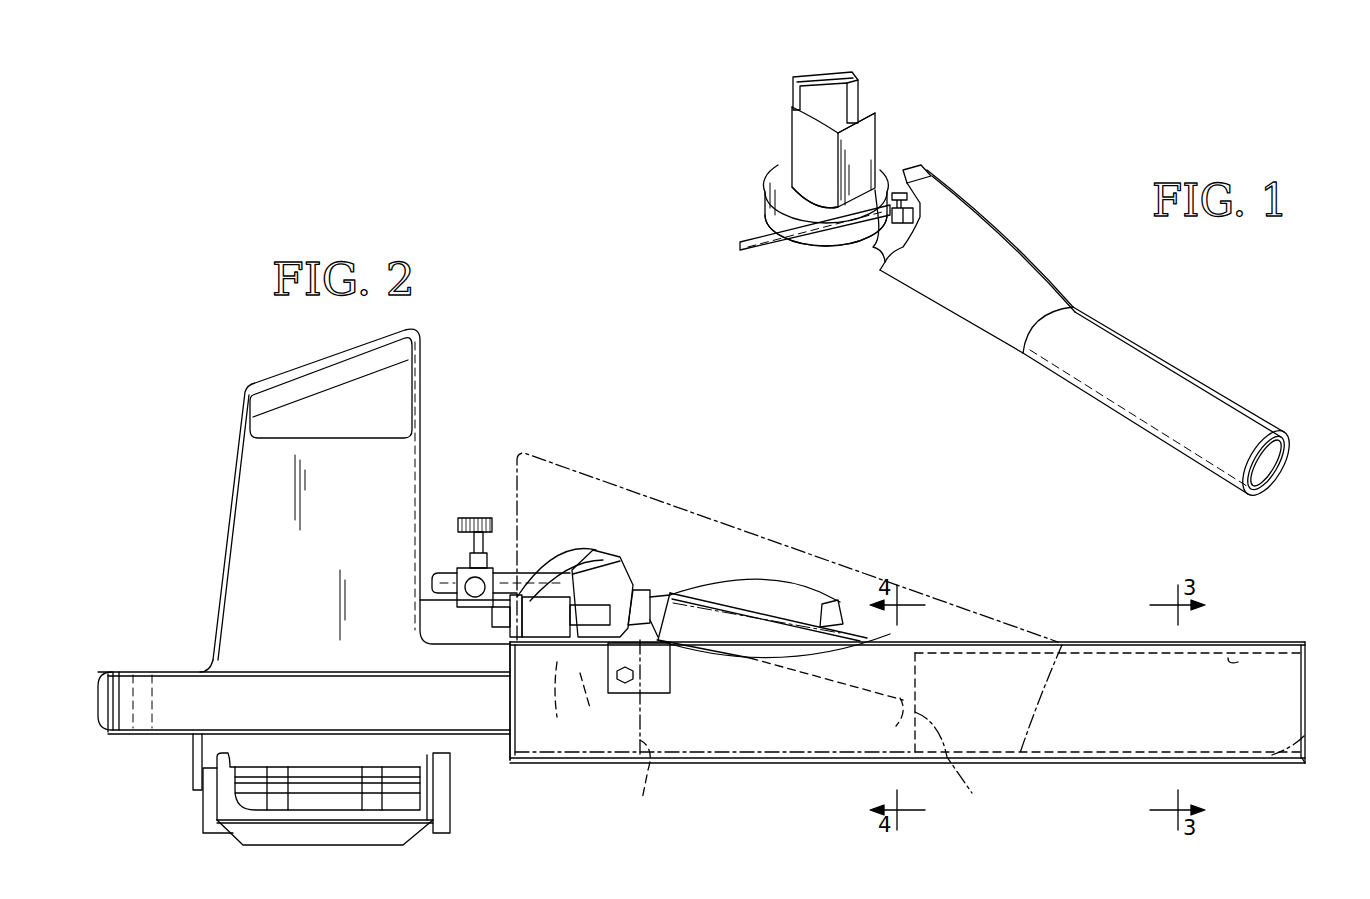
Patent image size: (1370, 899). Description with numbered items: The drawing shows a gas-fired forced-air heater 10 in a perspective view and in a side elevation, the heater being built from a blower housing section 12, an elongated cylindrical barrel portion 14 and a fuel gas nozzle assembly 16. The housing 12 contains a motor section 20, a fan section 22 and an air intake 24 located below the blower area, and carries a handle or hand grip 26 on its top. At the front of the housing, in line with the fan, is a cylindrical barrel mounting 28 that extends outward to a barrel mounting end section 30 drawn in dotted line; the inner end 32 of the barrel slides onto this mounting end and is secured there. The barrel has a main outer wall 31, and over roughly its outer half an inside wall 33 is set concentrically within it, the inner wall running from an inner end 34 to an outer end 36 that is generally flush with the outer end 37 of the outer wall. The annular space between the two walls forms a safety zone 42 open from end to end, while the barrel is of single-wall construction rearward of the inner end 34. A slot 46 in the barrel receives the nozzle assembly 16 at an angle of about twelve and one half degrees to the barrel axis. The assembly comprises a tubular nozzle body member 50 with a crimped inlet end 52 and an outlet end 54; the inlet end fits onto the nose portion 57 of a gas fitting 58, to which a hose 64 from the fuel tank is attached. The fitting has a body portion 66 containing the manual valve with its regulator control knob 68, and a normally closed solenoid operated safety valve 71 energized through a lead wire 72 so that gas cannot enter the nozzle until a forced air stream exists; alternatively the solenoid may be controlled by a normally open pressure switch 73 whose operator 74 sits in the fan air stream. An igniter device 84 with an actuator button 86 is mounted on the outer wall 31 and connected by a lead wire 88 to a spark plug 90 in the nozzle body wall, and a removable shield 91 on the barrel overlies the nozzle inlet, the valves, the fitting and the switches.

In FIG. 1, the heater 10 is at (1030, 158).
In FIG. 2, the heater 10 is at (694, 465).
In FIG. 1, the blower housing section 12 is at (895, 130).
In FIG. 2, the blower housing section 12 is at (304, 583).
In FIG. 1, the barrel portion 14 is at (1125, 322).
In FIG. 2, the barrel portion 14 is at (902, 720).
In FIG. 2, the fuel gas nozzle assembly 16 is at (742, 578).
In FIG. 1, the motor section 20 is at (798, 137).
In FIG. 2, the motor section 20 is at (408, 460).
In FIG. 1, the fan section 22 is at (765, 210).
In FIG. 2, the fan section 22 is at (135, 715).
In FIG. 1, the air intake 24 is at (820, 247).
In FIG. 2, the air intake 24 is at (205, 812).
In FIG. 1, the handle 26 is at (840, 75).
In FIG. 2, the handle 26 is at (293, 368).
In FIG. 1, the barrel mounting 28 is at (878, 268).
In FIG. 2, the barrel mounting 28 is at (478, 762).
In FIG. 2, the barrel mounting end section 30 is at (712, 732).
In FIG. 1, the main outer wall 31 is at (1218, 405).
In FIG. 2, the main outer wall 31 is at (803, 765).
In FIG. 2, the inner end 32 is at (510, 722).
In FIG. 1, the inside wall 33 is at (1282, 450).
In FIG. 2, the inside wall 33 is at (1238, 662).
In FIG. 2, the inner end 34 is at (988, 731).
In FIG. 2, the outer end 36 is at (1318, 729).
In FIG. 2, the outer end 37 is at (1300, 765).
In FIG. 2, the safety zone 42 is at (1108, 760).
In FIG. 2, the slot 46 is at (778, 655).
In FIG. 2, the tubular nozzle body member 50 is at (885, 642).
In FIG. 2, the inlet end 52 is at (663, 590).
In FIG. 2, the outlet end 54 is at (895, 718).
In FIG. 2, the nose portion 57 is at (677, 613).
In FIG. 2, the fitting 58 is at (528, 580).
In FIG. 1, the hose 64 is at (757, 252).
In FIG. 2, the hose 64 is at (440, 572).
In FIG. 2, the body portion 66 is at (478, 600).
In FIG. 1, the manual valve supply regulator control knob 68 is at (921, 175).
In FIG. 2, the manual valve supply regulator control knob 68 is at (478, 516).
In FIG. 2, the solenoid operated safety valve 71 is at (618, 562).
In FIG. 2, the lead wire 72 is at (582, 545).
In FIG. 2, the switch 73 is at (598, 703).
In FIG. 2, the operator 74 is at (559, 706).
In FIG. 2, the igniter device 84 is at (540, 640).
In FIG. 2, the actuator button 86 is at (490, 617).
In FIG. 2, the lead wire 88 is at (808, 585).
In FIG. 2, the spark plug 90 is at (845, 605).
In FIG. 1, the shield 91 is at (1005, 262).
In FIG. 2, the shield 91 is at (782, 535).